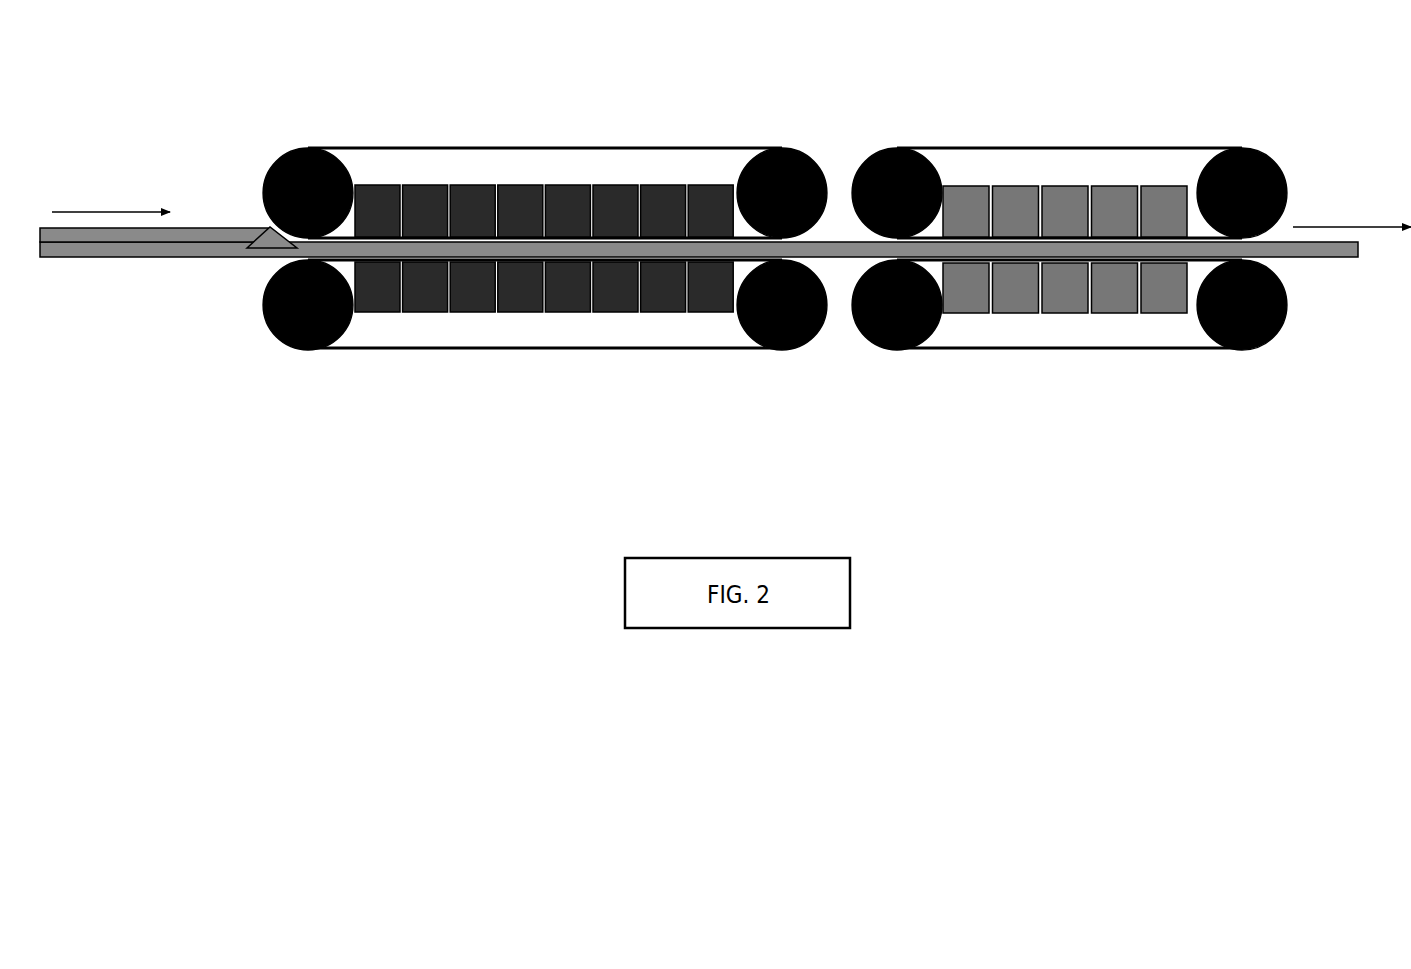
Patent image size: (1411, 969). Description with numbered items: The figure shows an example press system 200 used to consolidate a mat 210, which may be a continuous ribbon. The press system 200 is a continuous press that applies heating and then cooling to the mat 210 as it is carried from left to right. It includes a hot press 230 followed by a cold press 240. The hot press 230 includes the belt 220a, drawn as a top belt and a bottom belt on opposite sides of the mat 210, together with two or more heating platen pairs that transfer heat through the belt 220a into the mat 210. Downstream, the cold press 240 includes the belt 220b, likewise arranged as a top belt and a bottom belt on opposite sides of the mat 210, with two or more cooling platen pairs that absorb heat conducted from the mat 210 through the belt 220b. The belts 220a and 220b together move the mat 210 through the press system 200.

The press system 200 is at (223, 62).
The mat 210 is at (142, 258).
The belt 220a is at (448, 350).
The belt 220b is at (1048, 350).
The hot press 230 is at (732, 130).
The cold press 240 is at (1185, 130).